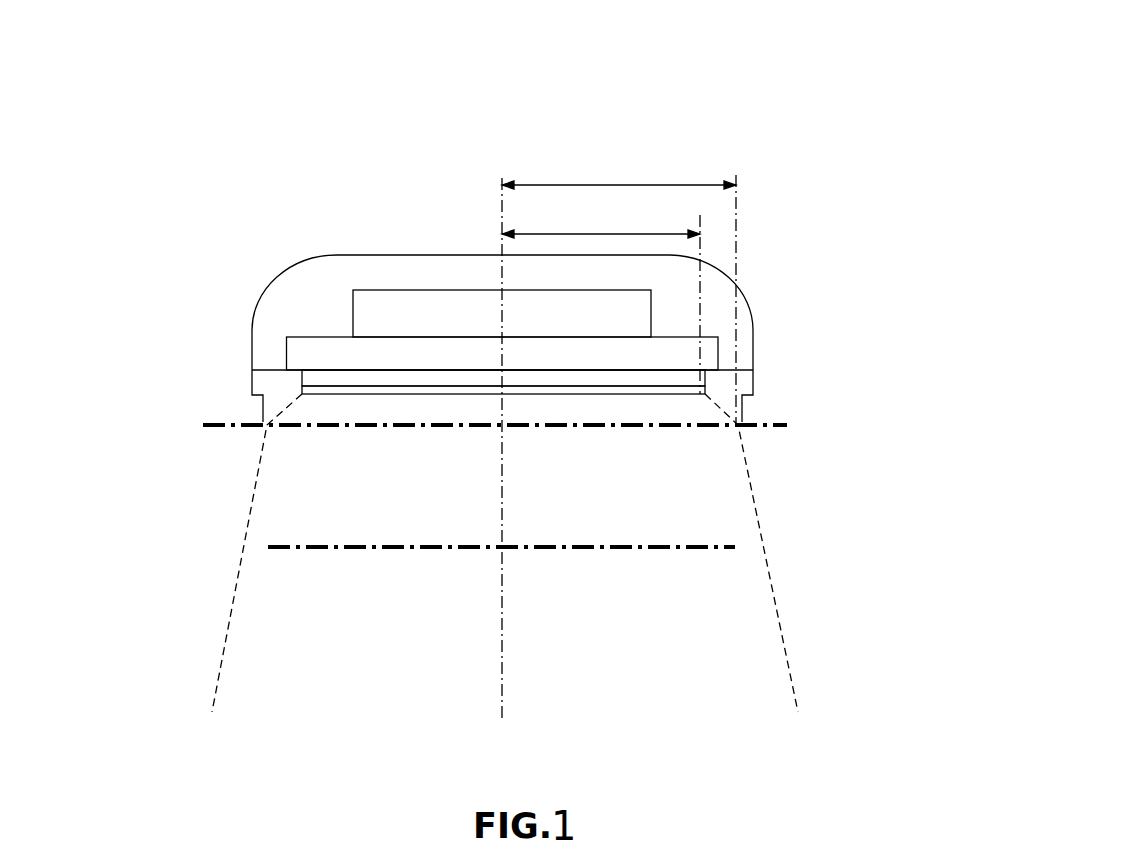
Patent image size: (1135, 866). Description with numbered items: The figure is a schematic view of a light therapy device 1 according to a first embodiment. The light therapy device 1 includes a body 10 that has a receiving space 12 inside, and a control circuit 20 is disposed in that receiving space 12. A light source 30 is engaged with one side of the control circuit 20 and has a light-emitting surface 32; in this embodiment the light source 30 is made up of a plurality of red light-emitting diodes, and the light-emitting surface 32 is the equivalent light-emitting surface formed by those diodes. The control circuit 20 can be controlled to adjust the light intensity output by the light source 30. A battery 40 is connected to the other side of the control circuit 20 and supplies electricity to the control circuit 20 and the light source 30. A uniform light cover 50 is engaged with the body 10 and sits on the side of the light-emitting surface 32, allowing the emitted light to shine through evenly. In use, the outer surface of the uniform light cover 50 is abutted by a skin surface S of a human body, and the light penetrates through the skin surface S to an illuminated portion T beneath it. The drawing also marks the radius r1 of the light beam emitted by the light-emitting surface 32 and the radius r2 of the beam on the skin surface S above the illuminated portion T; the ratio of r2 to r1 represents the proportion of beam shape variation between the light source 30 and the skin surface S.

The light therapy device 1 is at (708, 116).
The body 10 is at (284, 269).
The receiving space 12 is at (338, 278).
The control circuit 20 is at (292, 353).
The light source 30 is at (310, 386).
The light-emitting surface 32 is at (347, 394).
The battery 40 is at (413, 305).
The uniform light cover 50 is at (743, 403).
The skin surface S is at (785, 424).
The illuminated portion T is at (737, 547).
The radius of light beam emitted by the light-emitting surface r1 is at (601, 223).
The radius of light beam on the skin surface r2 is at (619, 173).